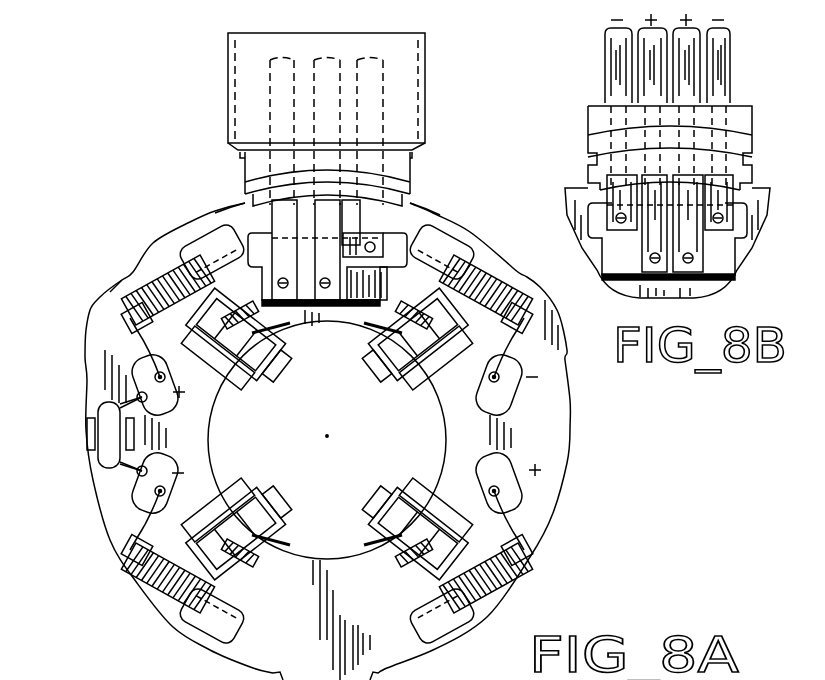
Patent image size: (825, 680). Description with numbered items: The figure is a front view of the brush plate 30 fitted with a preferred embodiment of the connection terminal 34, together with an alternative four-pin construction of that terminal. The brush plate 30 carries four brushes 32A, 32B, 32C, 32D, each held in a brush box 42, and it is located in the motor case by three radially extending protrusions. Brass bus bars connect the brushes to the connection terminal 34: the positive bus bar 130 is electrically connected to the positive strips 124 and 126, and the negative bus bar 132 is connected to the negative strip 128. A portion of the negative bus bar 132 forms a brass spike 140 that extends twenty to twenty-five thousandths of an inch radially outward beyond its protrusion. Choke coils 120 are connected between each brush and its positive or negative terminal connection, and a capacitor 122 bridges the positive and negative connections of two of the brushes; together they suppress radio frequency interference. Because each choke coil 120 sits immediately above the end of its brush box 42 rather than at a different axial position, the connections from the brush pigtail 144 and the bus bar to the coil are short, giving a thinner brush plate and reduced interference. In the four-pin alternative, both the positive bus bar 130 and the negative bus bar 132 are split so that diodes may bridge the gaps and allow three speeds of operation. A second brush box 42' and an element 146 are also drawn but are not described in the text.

In FIG. 8A, the brush plate 30 is at (570, 458).
In FIG. 8A, the brush 32A is at (288, 378).
In FIG. 8A, the brush 32B is at (377, 374).
In FIG. 8A, the brush 32C is at (378, 490).
In FIG. 8A, the brush 32D is at (305, 476).
In FIG. 8A, the connection terminal 34 is at (228, 40).
In FIG. 8A, the brush box 42 is at (164, 368).
In FIG. 8A, the terminal lug 42' is at (211, 522).
In FIG. 8A, the choke coil 120 is at (180, 260).
In FIG. 8A, the capacitor 122 is at (100, 462).
In FIG. 8A, the positive strip 124 is at (262, 62).
In FIG. 8B, the positive strip 124 is at (652, 38).
In FIG. 8A, the positive strip 126 is at (338, 58).
In FIG. 8B, the positive strip 126 is at (708, 62).
In FIG. 8A, the negative strip 128 is at (383, 57).
In FIG. 8B, the negative strip 128 is at (687, 36).
In FIG. 8A, the positive bus bar 130 is at (373, 272).
In FIG. 8B, the positive bus bar 130 is at (625, 262).
In FIG. 8A, the negative bus bar 132 is at (253, 238).
In FIG. 8B, the negative bus bar 132 is at (590, 211).
In FIG. 8A, the brass spike 140 is at (108, 312).
In FIG. 8A, the brush pigtail 144 is at (422, 366).
In FIG. 8B, the terminal 146 is at (605, 35).